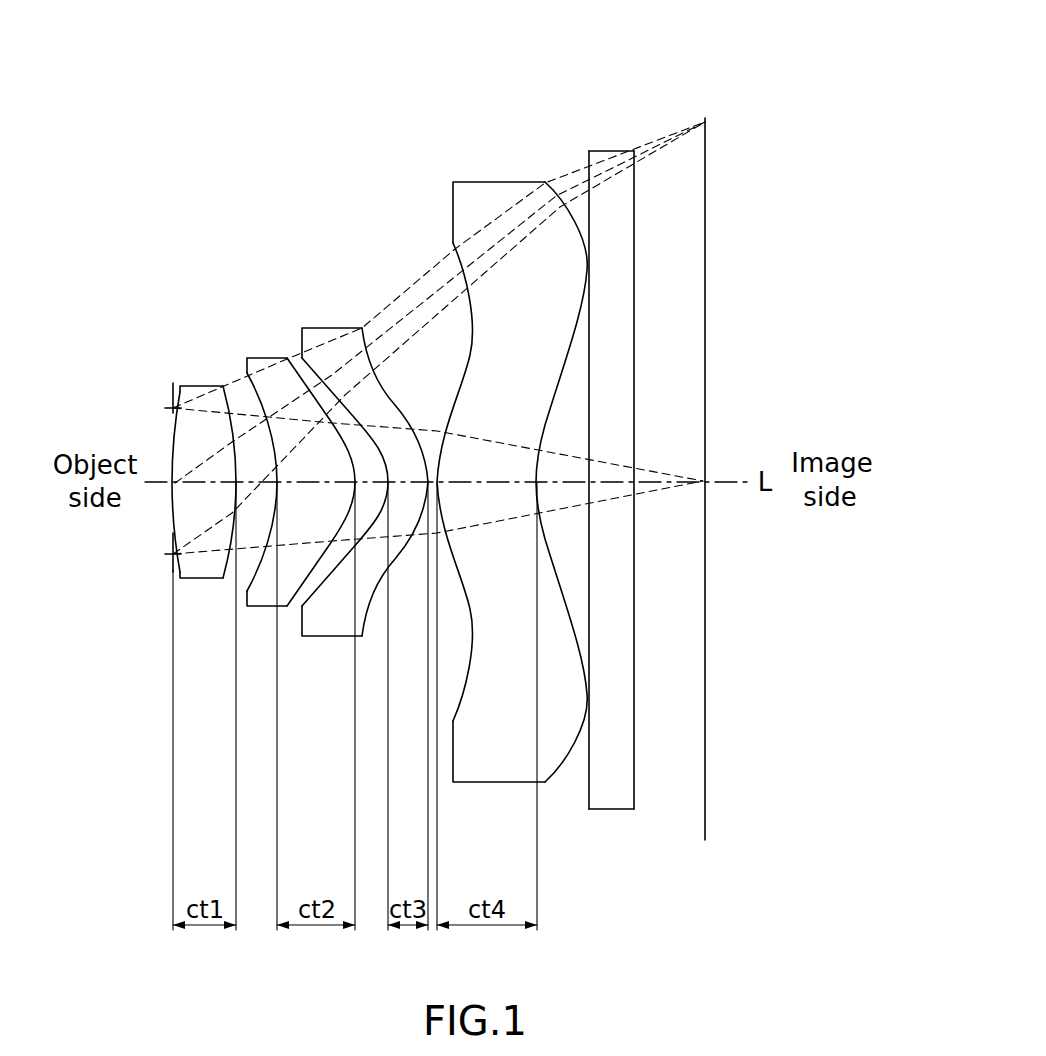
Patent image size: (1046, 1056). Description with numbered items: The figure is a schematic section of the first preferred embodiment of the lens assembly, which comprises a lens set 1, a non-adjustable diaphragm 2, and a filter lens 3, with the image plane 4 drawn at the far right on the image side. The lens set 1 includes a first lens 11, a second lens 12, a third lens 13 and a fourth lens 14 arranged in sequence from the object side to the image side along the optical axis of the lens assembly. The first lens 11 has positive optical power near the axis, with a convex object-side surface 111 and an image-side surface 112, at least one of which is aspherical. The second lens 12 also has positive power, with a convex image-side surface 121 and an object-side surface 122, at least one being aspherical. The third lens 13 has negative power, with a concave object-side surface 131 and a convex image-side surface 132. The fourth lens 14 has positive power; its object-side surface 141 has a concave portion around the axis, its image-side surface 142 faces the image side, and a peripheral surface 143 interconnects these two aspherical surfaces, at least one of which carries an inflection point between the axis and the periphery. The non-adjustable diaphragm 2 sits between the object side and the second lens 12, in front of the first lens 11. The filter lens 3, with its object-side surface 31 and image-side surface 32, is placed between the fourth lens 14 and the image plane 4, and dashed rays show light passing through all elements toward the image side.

The lens set 1 is at (184, 234).
The non-adjustable diaphragm 2 is at (172, 393).
The filter lens 3 is at (616, 416).
The image plane 4 is at (706, 152).
The first lens 11 is at (167, 456).
The second lens 12 is at (293, 469).
The third lens 13 is at (365, 412).
The fourth lens 14 is at (597, 475).
The object-side surface of filter lens 31 is at (588, 177).
The image-side surface of filter lens 32 is at (633, 178).
The object-side surface of first lens 111 is at (172, 548).
The image-side surface of first lens 112 is at (230, 565).
The image-side surface of second lens 121 is at (262, 557).
The object-side surface of second lens 122 is at (294, 606).
The object-side surface of third lens 131 is at (352, 420).
The image-side surface of third lens 132 is at (397, 392).
The object-side surface of fourth lens 141 is at (457, 398).
The image-side surface of fourth lens 142 is at (548, 528).
The peripheral surface 143 is at (493, 782).